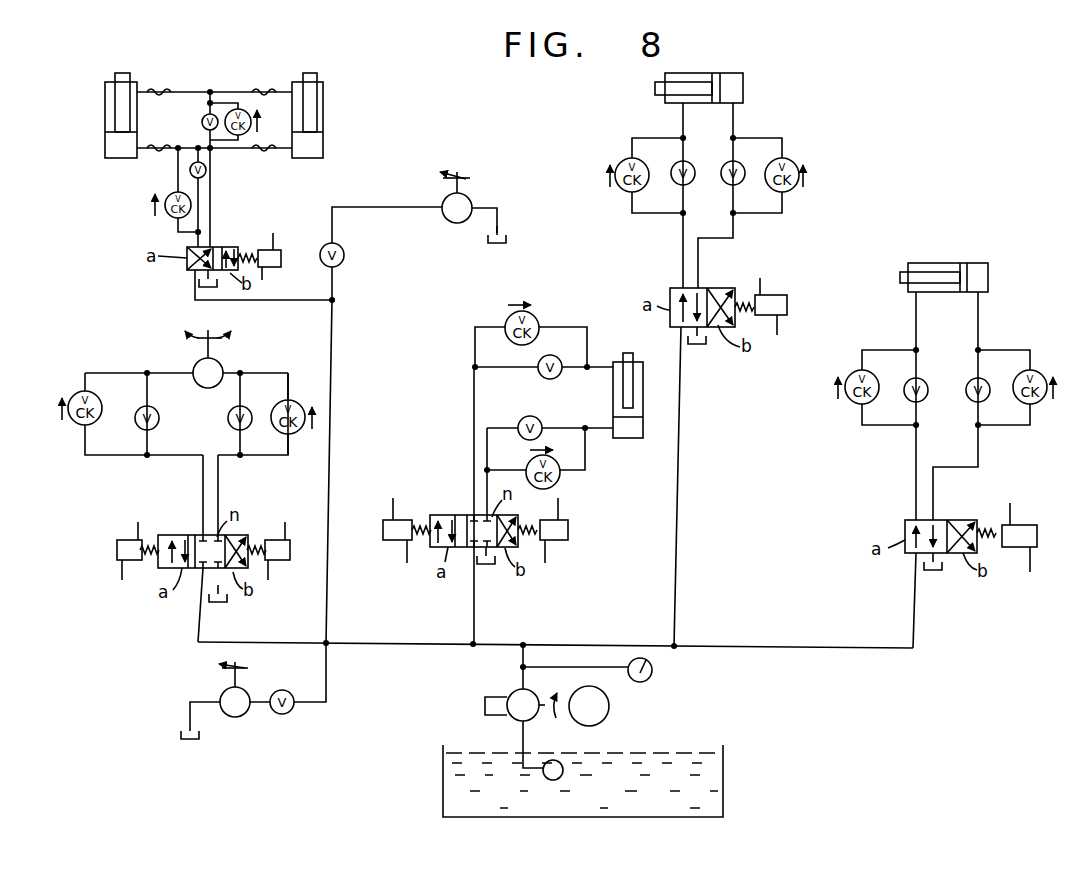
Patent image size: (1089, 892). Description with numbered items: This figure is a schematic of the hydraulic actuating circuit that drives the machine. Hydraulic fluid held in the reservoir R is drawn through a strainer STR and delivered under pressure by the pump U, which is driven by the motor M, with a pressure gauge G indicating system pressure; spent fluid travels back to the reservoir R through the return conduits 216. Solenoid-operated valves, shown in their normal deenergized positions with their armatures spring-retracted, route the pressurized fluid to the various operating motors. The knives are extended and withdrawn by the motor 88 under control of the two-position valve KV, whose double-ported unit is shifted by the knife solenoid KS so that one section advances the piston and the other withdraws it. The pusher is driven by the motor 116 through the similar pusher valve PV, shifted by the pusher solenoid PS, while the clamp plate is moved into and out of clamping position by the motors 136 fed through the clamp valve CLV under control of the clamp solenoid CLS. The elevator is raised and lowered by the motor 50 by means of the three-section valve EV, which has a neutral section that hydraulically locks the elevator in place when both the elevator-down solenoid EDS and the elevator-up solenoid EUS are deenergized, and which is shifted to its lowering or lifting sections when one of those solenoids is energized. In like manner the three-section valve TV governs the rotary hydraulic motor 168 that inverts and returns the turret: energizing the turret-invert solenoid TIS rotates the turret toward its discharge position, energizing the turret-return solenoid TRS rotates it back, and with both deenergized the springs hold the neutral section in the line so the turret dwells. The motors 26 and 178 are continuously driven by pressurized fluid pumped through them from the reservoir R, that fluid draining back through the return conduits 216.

The motors 136 is at (105, 92).
The motor 26 is at (467, 197).
The return conduits 216 is at (202, 282).
The motor 88 is at (728, 73).
The motor 116 is at (955, 263).
The rotary hydraulic motor 168 is at (217, 364).
The motor 50 is at (627, 432).
The motor 178 is at (244, 695).
The clamp valve CLV is at (226, 236).
The clamp solenoid CLS is at (281, 244).
The two-position valve KV is at (717, 286).
The knife solenoid KS is at (772, 293).
The pusher valve PV is at (952, 517).
The pusher solenoid PS is at (1018, 524).
The turret-return solenoid TRS is at (130, 540).
The three-section valve TV is at (182, 532).
The turret-invert solenoid TIS is at (273, 538).
The elevator-down solenoid EDS is at (392, 520).
The three-section valve EV is at (453, 512).
The elevator-up solenoid EUS is at (570, 528).
The pump U is at (518, 694).
The motor M is at (574, 706).
The pressure gauge G is at (651, 679).
The reservoir R is at (723, 765).
The strainer STR is at (558, 778).